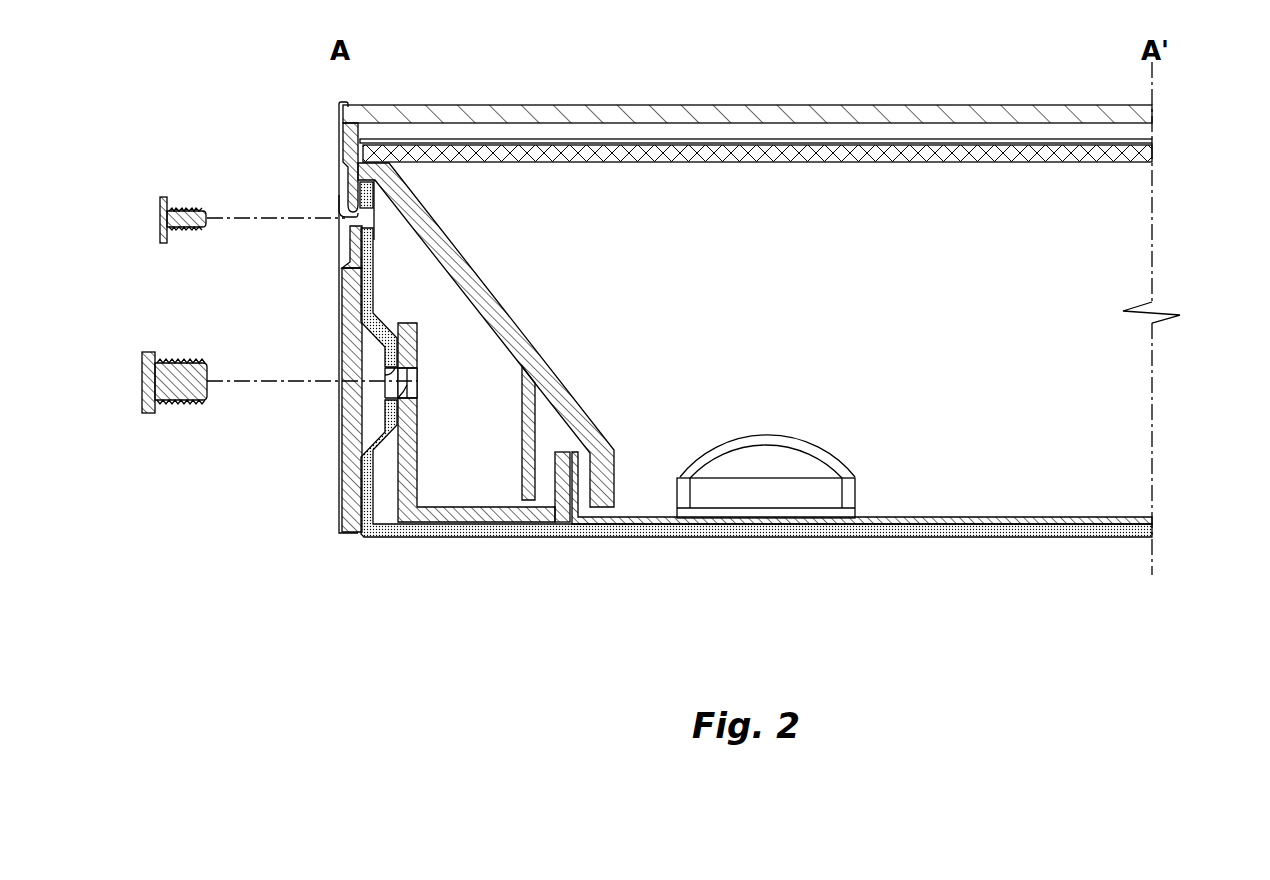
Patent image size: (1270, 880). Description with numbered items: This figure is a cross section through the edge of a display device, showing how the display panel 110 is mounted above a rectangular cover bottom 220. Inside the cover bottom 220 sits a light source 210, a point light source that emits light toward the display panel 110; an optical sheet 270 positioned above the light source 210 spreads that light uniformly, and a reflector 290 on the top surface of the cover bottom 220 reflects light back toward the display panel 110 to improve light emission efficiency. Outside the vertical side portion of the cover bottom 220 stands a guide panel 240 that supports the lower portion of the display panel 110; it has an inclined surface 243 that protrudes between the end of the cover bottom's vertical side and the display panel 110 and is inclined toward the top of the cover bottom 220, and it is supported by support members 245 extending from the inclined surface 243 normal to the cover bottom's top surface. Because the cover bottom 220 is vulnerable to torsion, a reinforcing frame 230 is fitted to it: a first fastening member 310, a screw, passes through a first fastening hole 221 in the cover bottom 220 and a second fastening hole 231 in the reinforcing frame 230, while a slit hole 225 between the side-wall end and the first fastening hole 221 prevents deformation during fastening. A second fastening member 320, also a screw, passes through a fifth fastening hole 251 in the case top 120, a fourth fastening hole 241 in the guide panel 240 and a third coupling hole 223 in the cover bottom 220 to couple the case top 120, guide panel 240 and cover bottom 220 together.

The display panel 110 is at (1152, 118).
The case top 120 is at (350, 100).
The light source 210 is at (847, 490).
The cover bottom 220 is at (1152, 531).
The first fastening hole 221 is at (397, 376).
The third coupling hole 223 is at (352, 224).
The slit hole 225 is at (361, 292).
The reinforcing frame 230 is at (458, 515).
The second fastening hole 231 is at (405, 397).
The guide panel 240 is at (349, 140).
The fourth fastening hole 241 is at (340, 215).
The inclined surface 243 is at (527, 340).
The support member 245 is at (598, 498).
The fifth fastening hole 251 is at (343, 205).
The optical sheet 270 is at (1152, 153).
The reflector 290 is at (1152, 520).
The first fastening member 310 is at (141, 374).
The second fastening member 320 is at (160, 214).